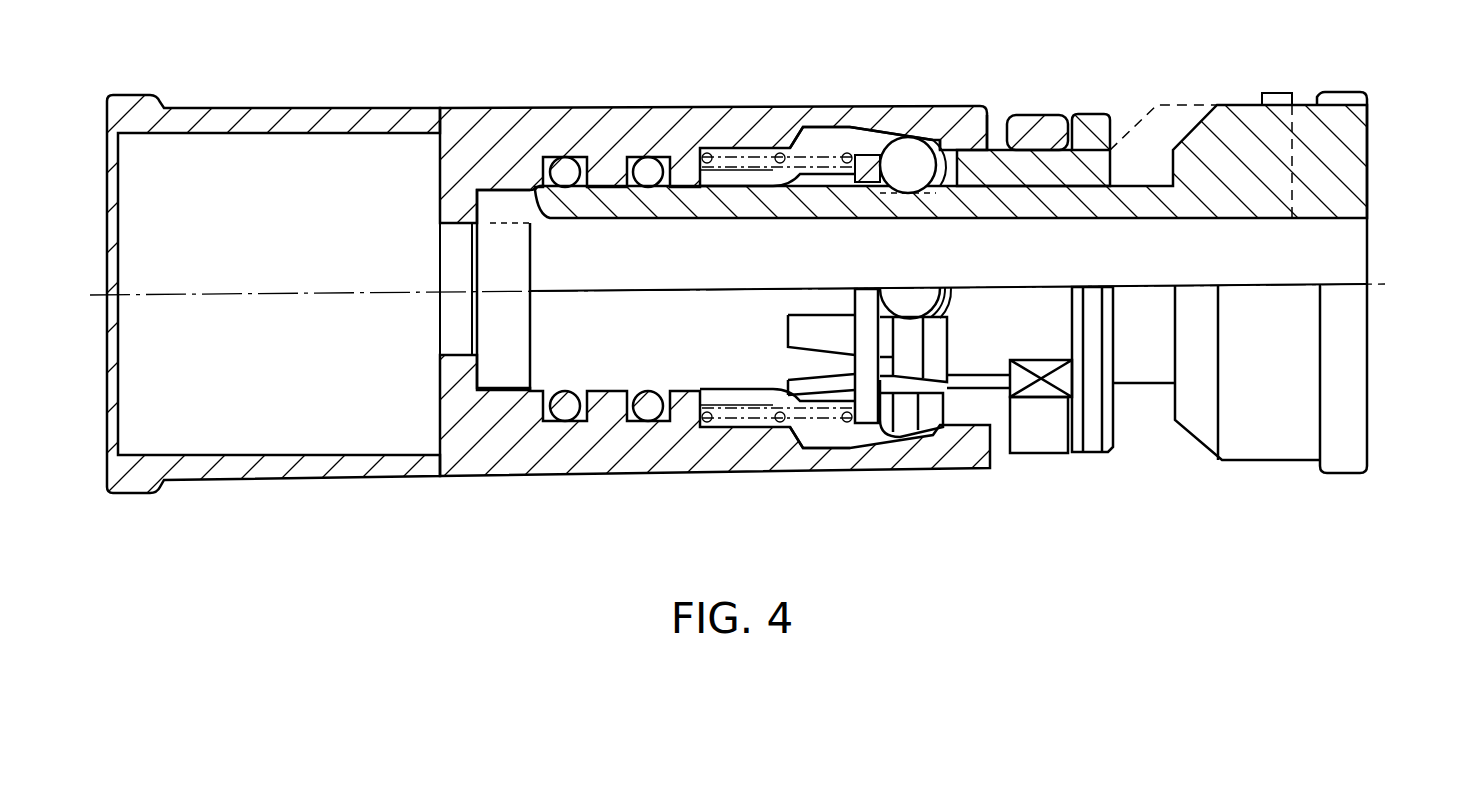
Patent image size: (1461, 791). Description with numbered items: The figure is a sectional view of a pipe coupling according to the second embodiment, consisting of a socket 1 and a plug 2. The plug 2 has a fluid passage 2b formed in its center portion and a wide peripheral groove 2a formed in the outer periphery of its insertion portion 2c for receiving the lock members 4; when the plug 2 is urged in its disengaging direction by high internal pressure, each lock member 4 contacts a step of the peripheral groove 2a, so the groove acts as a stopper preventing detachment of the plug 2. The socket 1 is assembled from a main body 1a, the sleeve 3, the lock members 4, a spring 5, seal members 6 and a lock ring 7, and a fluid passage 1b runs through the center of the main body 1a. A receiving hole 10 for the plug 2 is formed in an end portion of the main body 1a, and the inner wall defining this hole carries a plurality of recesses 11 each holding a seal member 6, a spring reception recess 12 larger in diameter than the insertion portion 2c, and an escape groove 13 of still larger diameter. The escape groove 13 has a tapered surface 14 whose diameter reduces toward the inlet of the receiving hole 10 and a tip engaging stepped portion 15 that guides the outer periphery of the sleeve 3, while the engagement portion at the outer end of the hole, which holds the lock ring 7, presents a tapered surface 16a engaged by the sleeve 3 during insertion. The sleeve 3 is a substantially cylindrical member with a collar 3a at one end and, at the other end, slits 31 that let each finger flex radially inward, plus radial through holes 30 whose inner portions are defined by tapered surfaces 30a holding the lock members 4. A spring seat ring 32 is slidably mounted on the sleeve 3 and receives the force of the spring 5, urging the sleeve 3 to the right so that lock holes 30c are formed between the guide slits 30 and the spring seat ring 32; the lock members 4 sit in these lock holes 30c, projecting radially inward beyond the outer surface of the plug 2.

The socket 1 is at (270, 105).
The main body 1a is at (470, 128).
The fluid passage 1b is at (456, 243).
The plug 2 is at (1262, 115).
The peripheral groove 2a is at (990, 195).
The fluid passage 2b is at (1338, 256).
The insertion portion 2c is at (760, 212).
The sleeve 3 is at (1105, 168).
The collar 3a is at (1085, 118).
The lock member 4 is at (908, 140).
The spring 5 is at (740, 148).
The seal member 6 is at (640, 158).
The lock ring 7 is at (1040, 118).
The receiving hole 10 is at (505, 372).
The recess 11 is at (585, 422).
The spring reception recess 12 is at (758, 432).
The escape groove 13 is at (818, 135).
The tapered surface 14 is at (880, 125).
The tip engaging stepped portion 15 is at (985, 108).
The tapered surface 16a is at (1030, 412).
The radial through hole 30 is at (813, 298).
The tapered surface 30a is at (922, 196).
The lock hole 30c is at (948, 130).
The slit 31 is at (802, 356).
The spring seat ring 32 is at (870, 428).